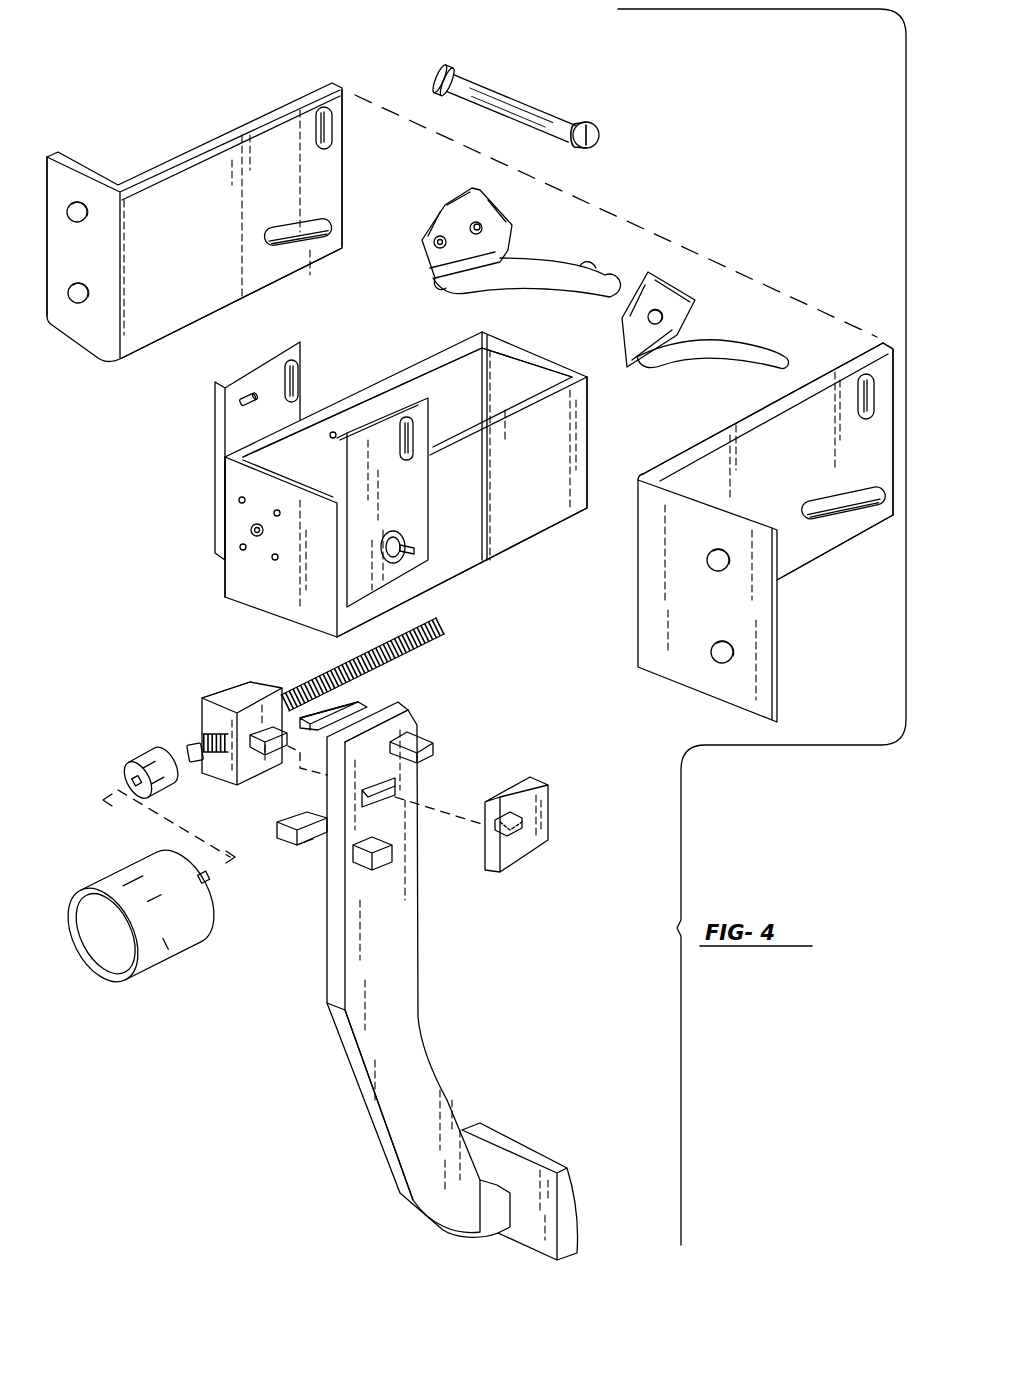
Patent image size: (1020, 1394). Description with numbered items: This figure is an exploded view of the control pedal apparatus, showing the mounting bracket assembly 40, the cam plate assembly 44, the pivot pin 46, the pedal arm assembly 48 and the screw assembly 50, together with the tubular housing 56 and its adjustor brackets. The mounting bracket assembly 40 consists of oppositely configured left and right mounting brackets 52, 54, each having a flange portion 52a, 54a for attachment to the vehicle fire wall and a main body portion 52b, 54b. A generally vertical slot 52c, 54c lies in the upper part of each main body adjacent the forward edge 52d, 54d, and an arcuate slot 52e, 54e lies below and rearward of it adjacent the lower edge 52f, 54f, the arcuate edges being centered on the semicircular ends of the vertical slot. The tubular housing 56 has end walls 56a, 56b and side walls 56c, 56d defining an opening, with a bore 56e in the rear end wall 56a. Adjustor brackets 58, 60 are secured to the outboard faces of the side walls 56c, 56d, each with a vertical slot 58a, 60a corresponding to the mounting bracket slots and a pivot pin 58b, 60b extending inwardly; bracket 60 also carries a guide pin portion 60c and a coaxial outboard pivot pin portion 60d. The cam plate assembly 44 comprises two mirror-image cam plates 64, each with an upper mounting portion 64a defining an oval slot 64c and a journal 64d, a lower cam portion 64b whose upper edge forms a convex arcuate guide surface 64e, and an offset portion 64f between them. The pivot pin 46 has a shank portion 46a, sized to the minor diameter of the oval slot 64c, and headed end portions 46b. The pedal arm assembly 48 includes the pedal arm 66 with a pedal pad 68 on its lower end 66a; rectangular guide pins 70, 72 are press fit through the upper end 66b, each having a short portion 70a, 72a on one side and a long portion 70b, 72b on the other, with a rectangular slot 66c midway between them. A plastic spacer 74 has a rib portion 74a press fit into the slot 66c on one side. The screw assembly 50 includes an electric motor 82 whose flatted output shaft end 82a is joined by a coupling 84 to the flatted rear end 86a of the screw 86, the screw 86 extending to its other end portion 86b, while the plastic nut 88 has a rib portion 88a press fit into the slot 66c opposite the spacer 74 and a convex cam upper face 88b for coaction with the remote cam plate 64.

The mounting bracket assembly 40 is at (143, 88).
The cam plate assembly 44 is at (672, 229).
The pivot pin 46 is at (533, 114).
The main body shank portion 46a is at (585, 135).
The headed end portions 46b is at (443, 80).
The pedal arm assembly 48 is at (449, 786).
The screw assembly 50 is at (148, 831).
The left mounting bracket 52 is at (234, 202).
The flange portion 52a is at (93, 153).
The main body portion 52b is at (273, 108).
The vertical slot 52c is at (320, 126).
The forward edge 52d is at (356, 156).
The arcuate slot 52e is at (295, 227).
The lower edge 52f is at (263, 293).
The right mounting bracket 54 is at (734, 501).
The flange portion 54a is at (724, 610).
The main body portion 54b is at (727, 432).
The vertical slot 54c is at (860, 400).
The forward edge 54d is at (882, 341).
The arcuate slot 54e is at (840, 489).
The lower edge 54f is at (838, 549).
The tubular housing 56 is at (361, 460).
The rear end wall 56a is at (298, 602).
The end wall 56b is at (530, 390).
The side wall 56c is at (470, 390).
The side wall 56d is at (547, 482).
The bore 56e is at (254, 531).
The adjustor bracket 58 is at (252, 446).
The vertical slot 58a is at (303, 378).
The pivot pin 58b is at (244, 403).
The adjustor bracket 60 is at (382, 502).
The vertical slot 60a is at (432, 409).
The pivot pin 60b is at (331, 436).
The guide pin portion 60c is at (392, 536).
The pivot pin portion 60d is at (416, 551).
The cam plate 64 is at (580, 264).
The upper mounting portion 64a is at (506, 218).
The lower cam portion 64b is at (551, 262).
The oval aperture or slot 64c is at (476, 226).
The journal 64d is at (433, 243).
The convex arcuate guide surface 64e is at (570, 293).
The offset portion 64f is at (438, 288).
The pedal arm 66 is at (412, 981).
The lower end 66a is at (403, 1188).
The upper end 66b is at (388, 774).
The rectangular slot 66c is at (384, 798).
The pedal pad 68 is at (544, 1151).
The guide pin 70 is at (315, 708).
The short portion 70a is at (423, 740).
The long portion 70b is at (370, 700).
The guide pin 72 is at (276, 823).
The short portion 72a is at (391, 855).
The long portion 72b is at (313, 840).
The plastic spacer 74 is at (551, 808).
The rib portion 74a is at (514, 834).
The electric motor 82 is at (166, 917).
The flatted forward end 82a is at (210, 882).
The coupling 84 is at (140, 751).
The screw 86 is at (441, 629).
The flatted rear end 86a is at (192, 750).
The rod end 86b is at (455, 656).
The plastic nut 88 is at (200, 718).
The rib portion 88a is at (274, 757).
The upper face 88b is at (232, 692).